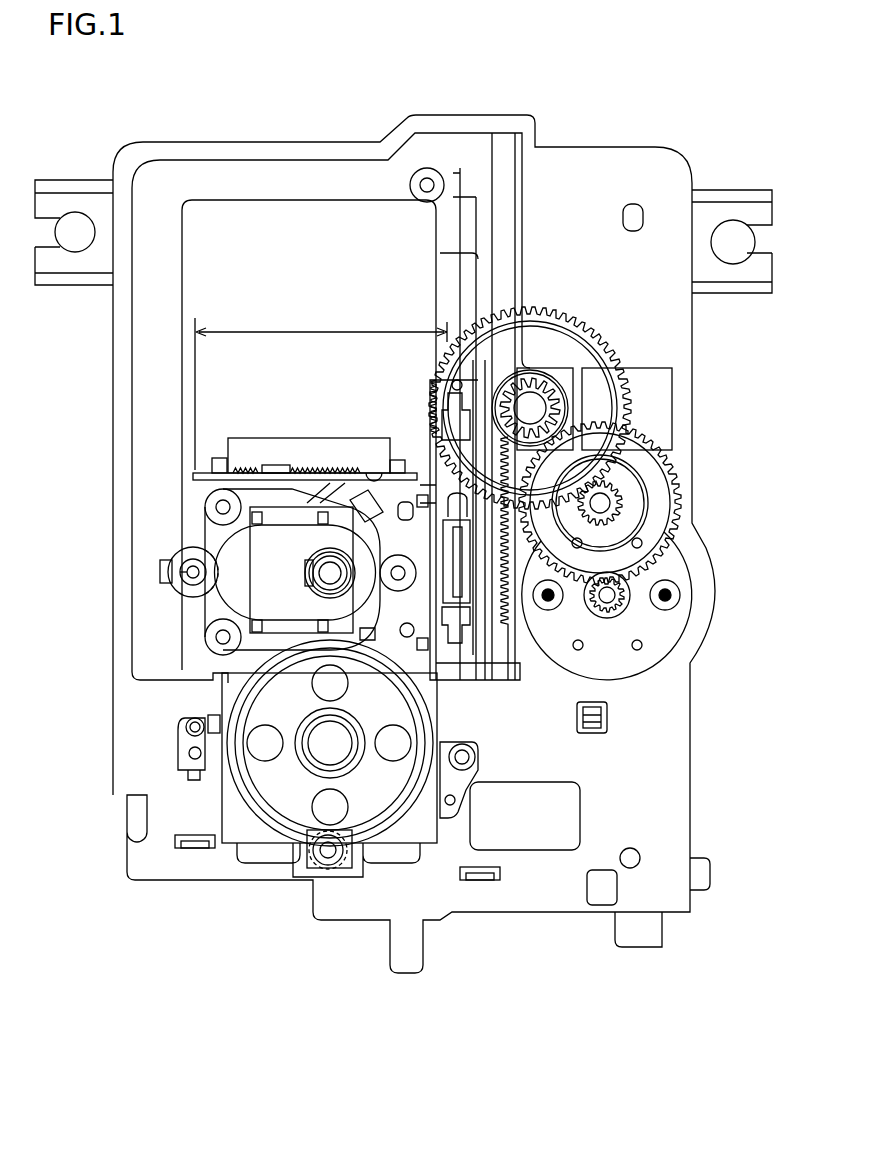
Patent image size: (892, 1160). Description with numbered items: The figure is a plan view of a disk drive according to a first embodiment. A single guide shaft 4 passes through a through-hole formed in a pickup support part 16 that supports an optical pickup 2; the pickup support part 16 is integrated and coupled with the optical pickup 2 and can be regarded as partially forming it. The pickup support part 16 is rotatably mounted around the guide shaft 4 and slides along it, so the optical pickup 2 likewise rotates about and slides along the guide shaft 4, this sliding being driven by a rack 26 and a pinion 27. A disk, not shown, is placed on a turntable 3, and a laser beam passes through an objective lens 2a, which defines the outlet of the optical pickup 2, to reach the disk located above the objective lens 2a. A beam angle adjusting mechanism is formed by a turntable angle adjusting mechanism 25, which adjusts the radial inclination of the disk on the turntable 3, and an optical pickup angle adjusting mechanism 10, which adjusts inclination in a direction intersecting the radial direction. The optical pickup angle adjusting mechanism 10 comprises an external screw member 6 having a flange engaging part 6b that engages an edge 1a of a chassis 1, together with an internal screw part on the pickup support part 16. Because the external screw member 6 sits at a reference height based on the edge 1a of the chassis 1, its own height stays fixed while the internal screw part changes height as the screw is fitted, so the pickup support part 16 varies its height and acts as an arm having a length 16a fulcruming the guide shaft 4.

The chassis 1 is at (150, 368).
The edge of chassis 1a is at (170, 518).
The optical pickup 2 is at (330, 573).
The objective lens 2a is at (307, 575).
The turntable 3 is at (271, 852).
The guide shaft 4 is at (448, 278).
The external screw member 6 is at (158, 598).
The flange engaging part 6b is at (158, 570).
The optical pickup angle adjusting mechanism 10 is at (257, 578).
The pickup support part 16 is at (260, 488).
The length of pickup support part 16a is at (321, 389).
The turntable angle adjusting mechanism 25 is at (332, 882).
The rack 26 is at (502, 630).
The pinion 27 is at (537, 372).